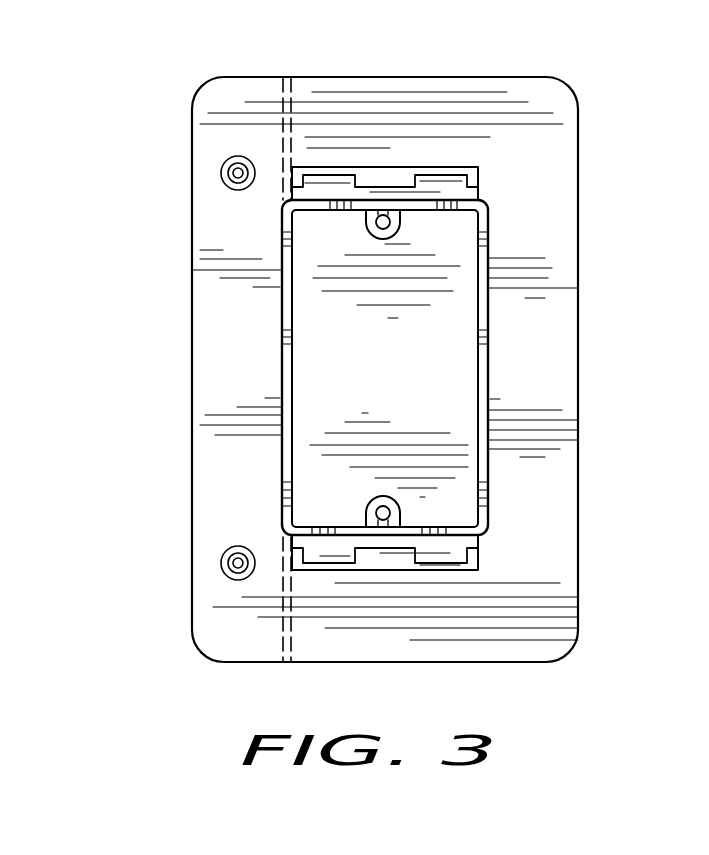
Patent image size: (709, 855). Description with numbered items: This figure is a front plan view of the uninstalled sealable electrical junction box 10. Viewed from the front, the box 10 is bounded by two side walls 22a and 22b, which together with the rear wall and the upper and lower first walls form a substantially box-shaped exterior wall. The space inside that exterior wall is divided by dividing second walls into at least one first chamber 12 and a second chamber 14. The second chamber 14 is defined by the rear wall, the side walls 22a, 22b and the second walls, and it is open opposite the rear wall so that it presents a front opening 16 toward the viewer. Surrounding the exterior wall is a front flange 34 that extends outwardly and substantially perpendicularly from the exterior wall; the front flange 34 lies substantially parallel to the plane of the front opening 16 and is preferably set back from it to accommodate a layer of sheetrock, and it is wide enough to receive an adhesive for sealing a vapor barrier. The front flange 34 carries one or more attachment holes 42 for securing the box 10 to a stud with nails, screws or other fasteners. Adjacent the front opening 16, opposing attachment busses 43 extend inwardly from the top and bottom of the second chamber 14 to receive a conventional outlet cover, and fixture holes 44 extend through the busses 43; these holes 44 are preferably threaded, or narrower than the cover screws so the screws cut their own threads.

The sealable electrical junction box 10 is at (512, 212).
The first chamber 12 is at (222, 632).
The second chamber 14 is at (433, 335).
The front opening 16 is at (410, 372).
The side wall 22a is at (483, 480).
The side wall 22b is at (292, 455).
The front flange 34 is at (543, 565).
The attachment hole 42 is at (222, 177).
The attachment buss 43 is at (370, 226).
The fixture hole 44 is at (370, 237).